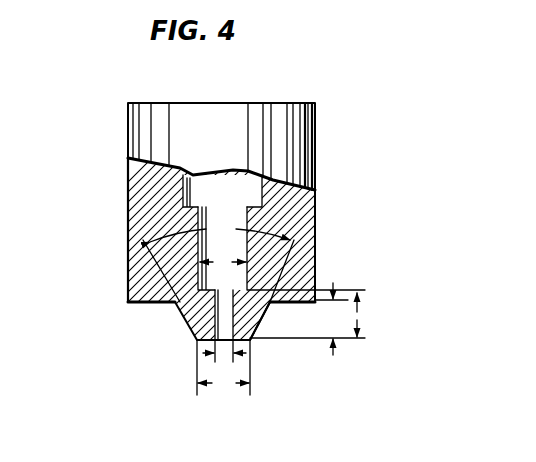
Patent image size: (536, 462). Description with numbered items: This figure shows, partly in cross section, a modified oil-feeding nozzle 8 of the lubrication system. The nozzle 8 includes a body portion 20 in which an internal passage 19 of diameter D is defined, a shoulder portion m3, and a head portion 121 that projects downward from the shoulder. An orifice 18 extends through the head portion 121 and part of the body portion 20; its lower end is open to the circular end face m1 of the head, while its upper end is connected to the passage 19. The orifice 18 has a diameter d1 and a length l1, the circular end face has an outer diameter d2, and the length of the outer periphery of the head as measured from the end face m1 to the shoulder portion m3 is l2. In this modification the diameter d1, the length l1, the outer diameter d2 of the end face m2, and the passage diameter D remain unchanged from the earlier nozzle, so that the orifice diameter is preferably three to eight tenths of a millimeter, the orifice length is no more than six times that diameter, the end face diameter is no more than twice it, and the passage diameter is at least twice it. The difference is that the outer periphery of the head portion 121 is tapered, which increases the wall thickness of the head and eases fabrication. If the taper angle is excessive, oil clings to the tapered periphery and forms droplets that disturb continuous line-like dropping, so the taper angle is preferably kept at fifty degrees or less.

The nozzle 8 is at (120, 128).
The body portion 20 is at (317, 149).
The passage 19 is at (244, 272).
The orifice 18 is at (216, 320).
The head portion 121 is at (257, 312).
The diameter of the passage D is at (223, 263).
The diameter of the orifice d1 is at (224, 359).
The outer diameter of the circular end face d2 is at (223, 369).
The length of the orifice l1 is at (358, 315).
The length of the outer periphery of the head l2 is at (307, 319).
The circular end face m1 is at (250, 343).
The end face m2 is at (257, 328).
The shoulder portion m3 is at (150, 303).